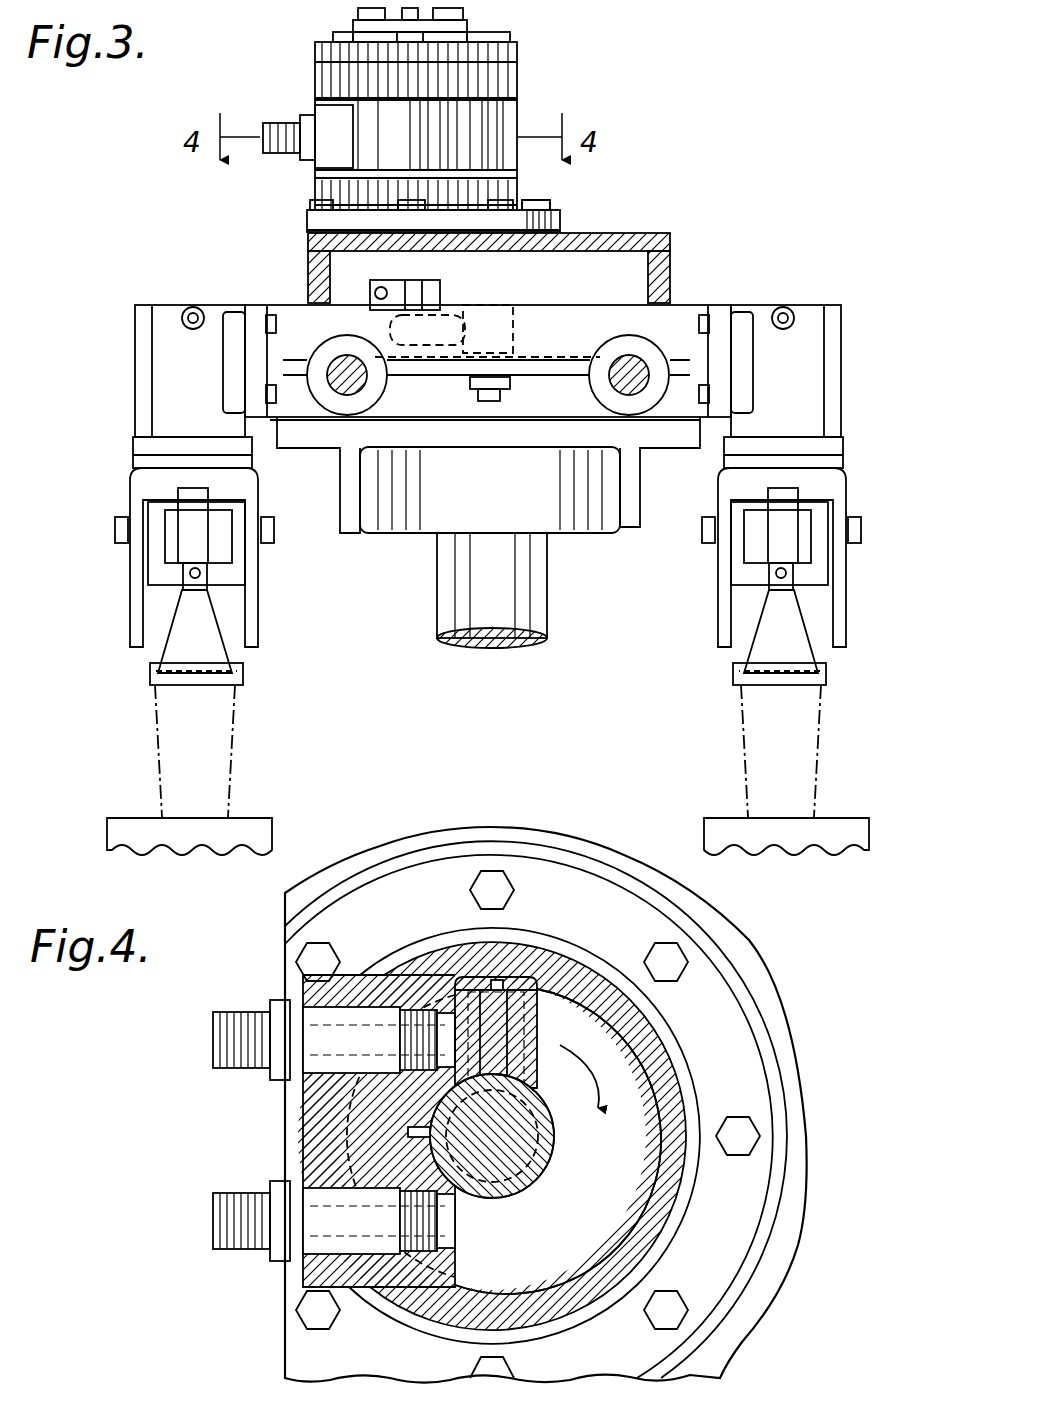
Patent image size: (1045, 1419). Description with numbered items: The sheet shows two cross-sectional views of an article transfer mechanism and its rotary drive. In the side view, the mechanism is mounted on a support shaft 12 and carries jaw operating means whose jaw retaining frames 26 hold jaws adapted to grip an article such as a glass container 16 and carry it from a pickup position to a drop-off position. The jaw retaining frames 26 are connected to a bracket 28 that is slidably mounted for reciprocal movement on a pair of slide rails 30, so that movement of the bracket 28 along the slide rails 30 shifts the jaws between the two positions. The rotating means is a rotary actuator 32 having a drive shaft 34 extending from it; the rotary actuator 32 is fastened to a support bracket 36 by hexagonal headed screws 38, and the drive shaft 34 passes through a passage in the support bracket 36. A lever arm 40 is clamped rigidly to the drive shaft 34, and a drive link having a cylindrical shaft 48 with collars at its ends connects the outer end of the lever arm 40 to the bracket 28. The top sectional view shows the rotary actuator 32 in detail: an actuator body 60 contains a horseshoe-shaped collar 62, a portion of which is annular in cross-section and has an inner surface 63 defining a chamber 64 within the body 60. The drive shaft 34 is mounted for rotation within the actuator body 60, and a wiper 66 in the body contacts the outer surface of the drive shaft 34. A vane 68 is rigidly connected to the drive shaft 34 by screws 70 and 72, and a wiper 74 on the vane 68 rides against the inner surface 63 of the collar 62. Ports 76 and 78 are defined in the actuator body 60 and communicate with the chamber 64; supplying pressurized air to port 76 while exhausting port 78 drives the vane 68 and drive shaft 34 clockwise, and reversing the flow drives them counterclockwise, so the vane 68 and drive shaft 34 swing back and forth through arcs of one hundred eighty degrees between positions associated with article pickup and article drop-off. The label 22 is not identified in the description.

In FIG. 3, the support shaft 12 is at (548, 578).
In FIG. 3, the glass container 16 is at (236, 748).
In FIG. 3, the ground / base 22 is at (125, 826).
In FIG. 3, the jaw retaining frame 26 is at (138, 365).
In FIG. 3, the bracket 28 is at (552, 367).
In FIG. 3, the slide rails 30 is at (345, 390).
In FIG. 3, the rotary actuator 32 is at (517, 100).
In FIG. 4, the rotary actuator 32 is at (527, 828).
In FIG. 4, the drive shaft 34 is at (515, 1198).
In FIG. 3, the support bracket 36 is at (634, 236).
In FIG. 3, the hexagonal headed screws 38 is at (535, 205).
In FIG. 4, the hexagonal headed screws 38 is at (480, 888).
In FIG. 3, the lever arm 40 is at (370, 292).
In FIG. 3, the cylindrical shaft 48 is at (462, 308).
In FIG. 4, the actuator body 60 is at (712, 978).
In FIG. 4, the horseshoe-shaped collar 62 is at (668, 1074).
In FIG. 4, the inner surface 63 is at (650, 1147).
In FIG. 4, the chamber 64 is at (605, 1192).
In FIG. 4, the wiper 66 is at (420, 1127).
In FIG. 4, the vane 68 is at (547, 995).
In FIG. 4, the screw 70 is at (432, 975).
In FIG. 4, the screw 72 is at (579, 1063).
In FIG. 4, the wiper 74 is at (498, 980).
In FIG. 4, the port 76 is at (213, 1040).
In FIG. 4, the port 78 is at (213, 1218).